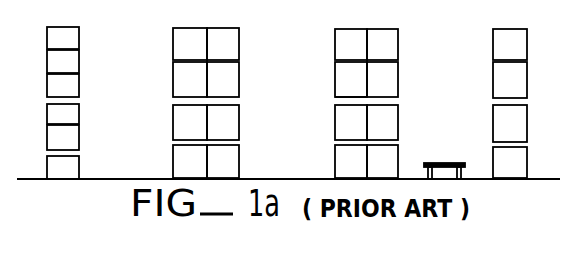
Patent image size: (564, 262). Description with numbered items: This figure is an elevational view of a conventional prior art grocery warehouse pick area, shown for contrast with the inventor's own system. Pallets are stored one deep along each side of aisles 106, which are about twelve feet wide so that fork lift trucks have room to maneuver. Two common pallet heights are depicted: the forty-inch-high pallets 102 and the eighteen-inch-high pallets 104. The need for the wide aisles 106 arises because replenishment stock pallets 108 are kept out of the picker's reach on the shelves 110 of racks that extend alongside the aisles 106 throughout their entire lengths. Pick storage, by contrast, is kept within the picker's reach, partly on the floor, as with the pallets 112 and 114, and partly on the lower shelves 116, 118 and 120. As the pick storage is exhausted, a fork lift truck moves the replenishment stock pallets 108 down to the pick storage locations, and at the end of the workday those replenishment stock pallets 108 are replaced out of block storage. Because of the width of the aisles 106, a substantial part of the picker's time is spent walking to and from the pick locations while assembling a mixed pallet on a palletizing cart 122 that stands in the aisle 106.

The pallets 102 is at (502, 157).
The pallets 104 is at (73, 166).
The aisles 106 is at (137, 121).
The replenishment stock pallets 108 is at (342, 44).
The shelves 110 is at (335, 95).
The pallets 112 is at (335, 177).
The pallets 114 is at (240, 176).
The lower shelves 116 is at (335, 138).
The lower shelves 118 is at (239, 138).
The lower shelves 120 is at (79, 149).
The palletizing cart 122 is at (440, 164).